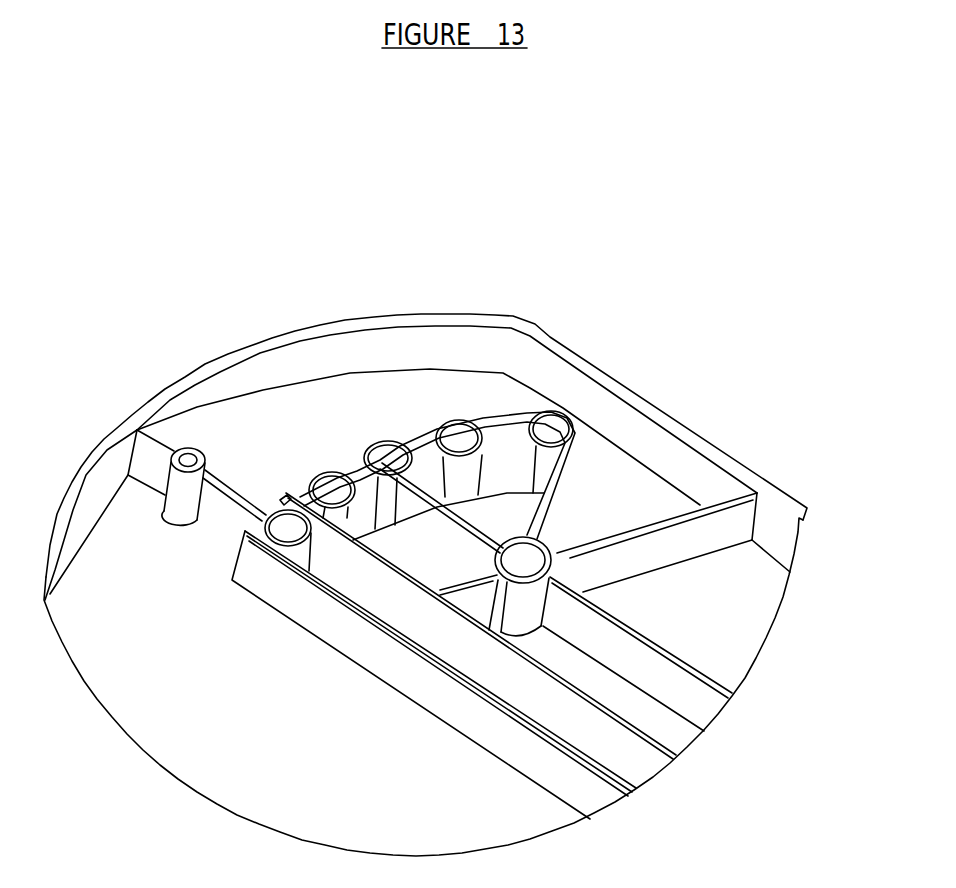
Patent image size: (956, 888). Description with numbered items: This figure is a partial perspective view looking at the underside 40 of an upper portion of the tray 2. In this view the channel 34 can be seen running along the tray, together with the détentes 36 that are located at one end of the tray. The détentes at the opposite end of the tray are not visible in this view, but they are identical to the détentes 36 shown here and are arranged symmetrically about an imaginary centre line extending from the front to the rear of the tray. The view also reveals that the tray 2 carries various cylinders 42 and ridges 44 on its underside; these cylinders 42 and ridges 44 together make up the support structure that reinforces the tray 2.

The tray 2 is at (425, 514).
The channel 34 is at (481, 549).
The détentes 36 is at (462, 437).
The underside 40 is at (377, 410).
The cylinders 42 is at (610, 521).
The ridges 44 is at (722, 492).